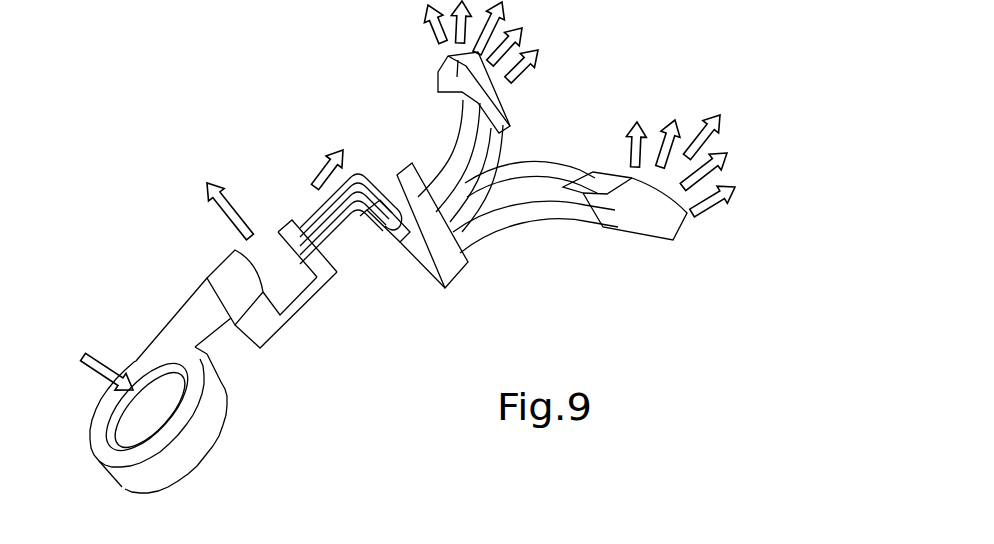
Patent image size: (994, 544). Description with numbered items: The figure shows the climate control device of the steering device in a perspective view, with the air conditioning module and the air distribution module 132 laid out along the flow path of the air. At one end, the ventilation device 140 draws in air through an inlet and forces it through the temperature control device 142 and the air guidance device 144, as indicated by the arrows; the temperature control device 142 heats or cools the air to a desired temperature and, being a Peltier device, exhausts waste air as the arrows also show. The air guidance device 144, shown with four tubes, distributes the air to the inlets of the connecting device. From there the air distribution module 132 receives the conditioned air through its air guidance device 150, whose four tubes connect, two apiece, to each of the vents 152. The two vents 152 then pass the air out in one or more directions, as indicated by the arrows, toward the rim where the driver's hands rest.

The air distribution module 132 is at (158, 98).
The ventilation device 140 is at (129, 343).
The temperature control device 142 is at (266, 336).
The air guidance device 144 is at (310, 221).
The air guidance device 150 is at (442, 166).
The vents 152 is at (428, 78).